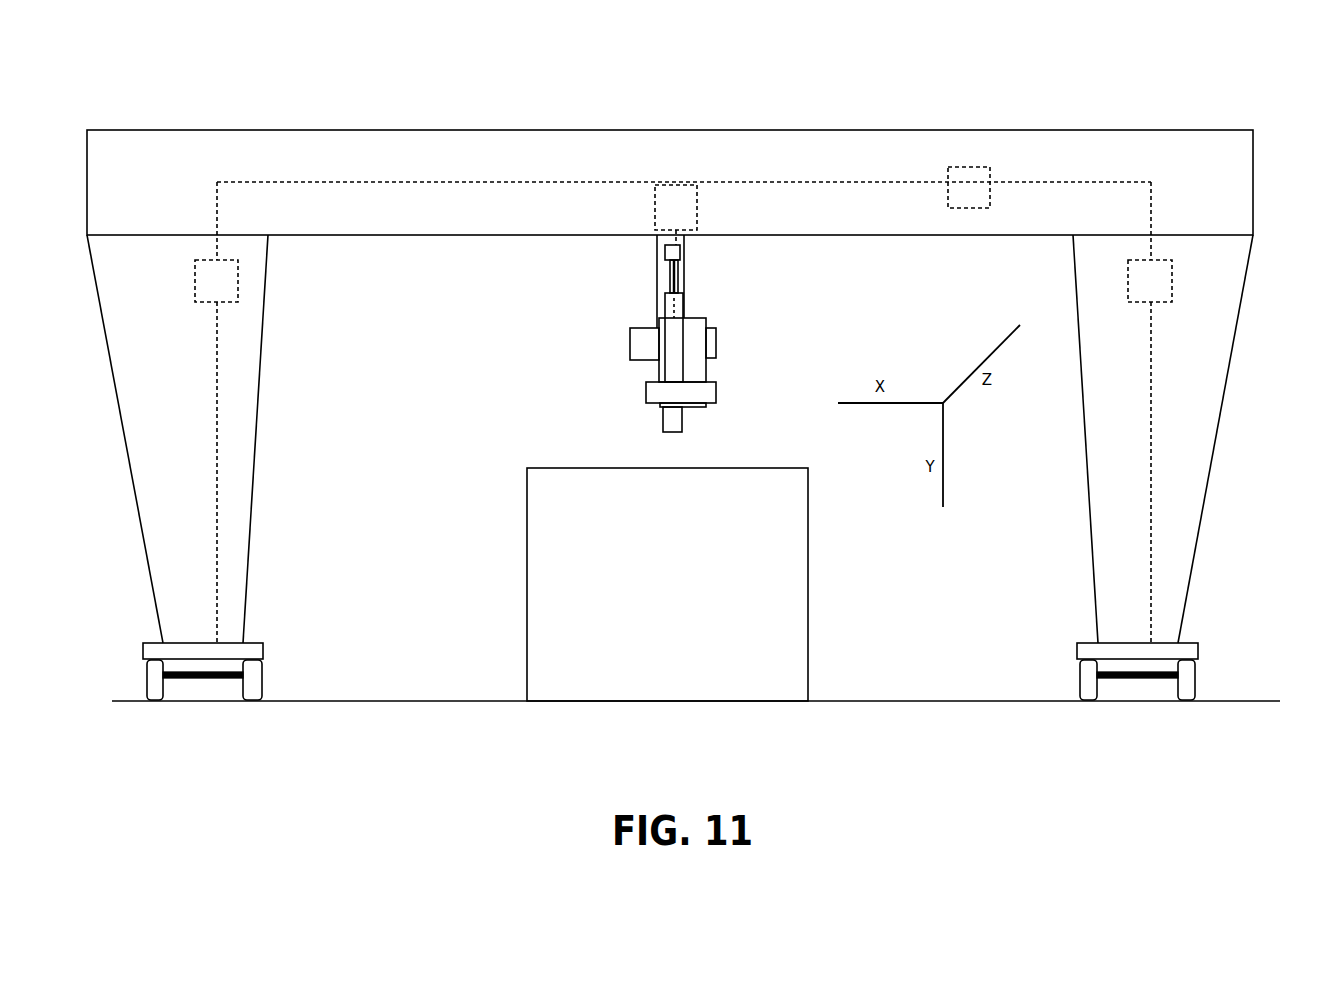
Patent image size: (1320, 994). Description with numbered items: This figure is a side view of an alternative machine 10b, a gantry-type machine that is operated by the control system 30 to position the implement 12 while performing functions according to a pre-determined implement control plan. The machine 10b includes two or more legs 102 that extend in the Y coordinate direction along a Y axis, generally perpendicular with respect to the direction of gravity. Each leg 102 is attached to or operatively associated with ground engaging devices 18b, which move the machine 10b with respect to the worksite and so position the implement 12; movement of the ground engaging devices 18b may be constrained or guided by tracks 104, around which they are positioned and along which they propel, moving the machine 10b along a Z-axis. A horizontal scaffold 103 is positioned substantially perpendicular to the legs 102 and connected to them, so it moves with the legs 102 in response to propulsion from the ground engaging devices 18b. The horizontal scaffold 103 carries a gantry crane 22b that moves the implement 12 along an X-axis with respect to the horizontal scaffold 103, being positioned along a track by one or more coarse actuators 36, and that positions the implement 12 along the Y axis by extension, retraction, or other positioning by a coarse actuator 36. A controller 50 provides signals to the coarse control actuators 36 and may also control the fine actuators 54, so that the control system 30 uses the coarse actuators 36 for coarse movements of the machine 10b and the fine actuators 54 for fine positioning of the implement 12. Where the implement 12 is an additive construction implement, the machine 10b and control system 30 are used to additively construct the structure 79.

The machine 10b is at (865, 90).
The control system 30 is at (760, 85).
The horizontal scaffold 103 is at (386, 162).
The legs 102 is at (138, 441).
The tracks 104 is at (217, 676).
The ground engaging devices 18b is at (262, 677).
The coarse control actuators 36 is at (683, 243).
The controller 50 is at (969, 187).
The gantry crane 22b is at (655, 281).
The fine actuators 54 is at (720, 328).
The implement 12 is at (697, 364).
The structure 79 is at (780, 610).